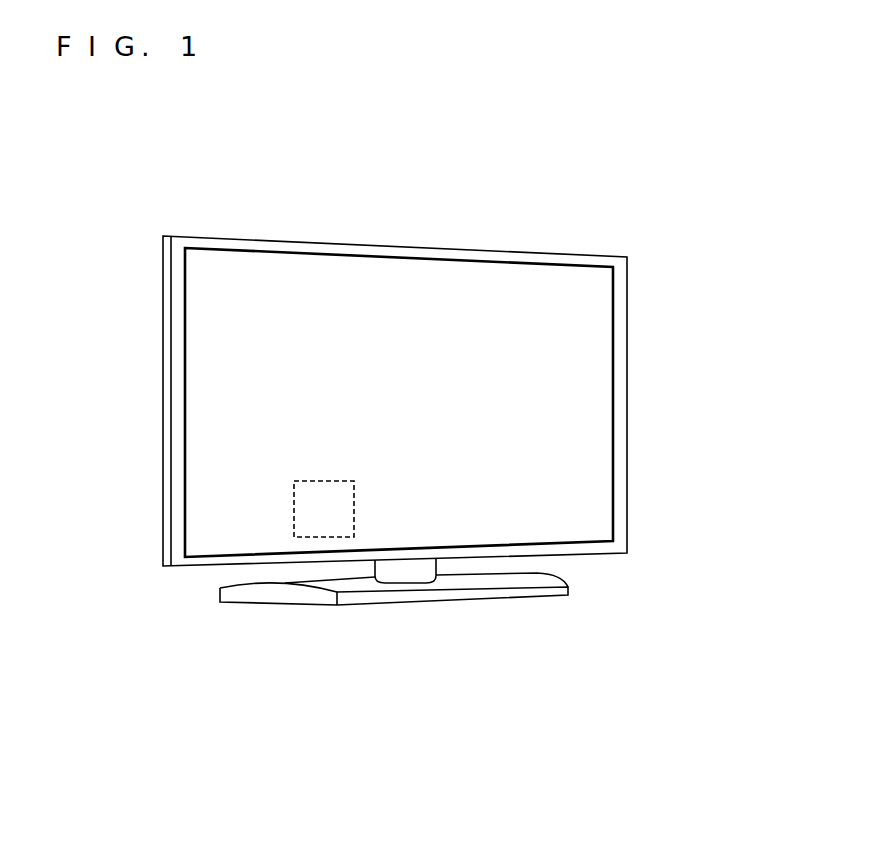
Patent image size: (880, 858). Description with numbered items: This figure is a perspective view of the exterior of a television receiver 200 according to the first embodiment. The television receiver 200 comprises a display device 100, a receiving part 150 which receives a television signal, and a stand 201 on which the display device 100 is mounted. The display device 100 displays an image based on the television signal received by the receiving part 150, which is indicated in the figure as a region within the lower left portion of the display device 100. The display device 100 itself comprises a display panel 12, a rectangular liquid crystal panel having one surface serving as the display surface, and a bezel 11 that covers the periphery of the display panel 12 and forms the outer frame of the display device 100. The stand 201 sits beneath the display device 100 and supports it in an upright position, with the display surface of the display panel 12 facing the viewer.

The television receiver 200 is at (746, 182).
The display device 100 is at (415, 429).
The bezel 11 is at (627, 324).
The display panel 12 is at (578, 379).
The receiving part 150 is at (294, 508).
The stand 201 is at (517, 582).